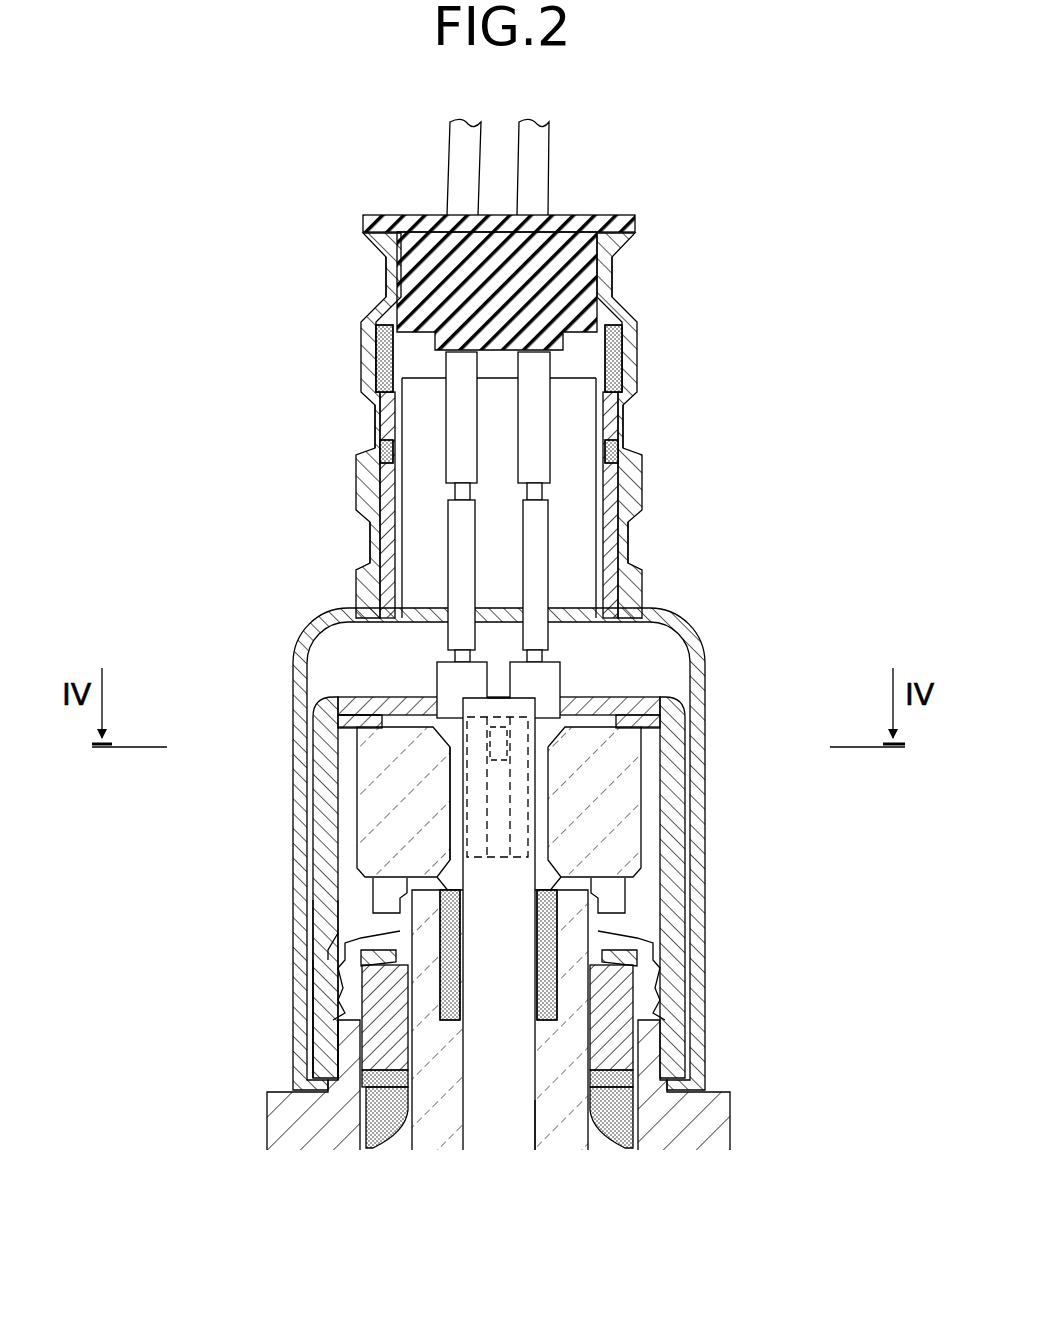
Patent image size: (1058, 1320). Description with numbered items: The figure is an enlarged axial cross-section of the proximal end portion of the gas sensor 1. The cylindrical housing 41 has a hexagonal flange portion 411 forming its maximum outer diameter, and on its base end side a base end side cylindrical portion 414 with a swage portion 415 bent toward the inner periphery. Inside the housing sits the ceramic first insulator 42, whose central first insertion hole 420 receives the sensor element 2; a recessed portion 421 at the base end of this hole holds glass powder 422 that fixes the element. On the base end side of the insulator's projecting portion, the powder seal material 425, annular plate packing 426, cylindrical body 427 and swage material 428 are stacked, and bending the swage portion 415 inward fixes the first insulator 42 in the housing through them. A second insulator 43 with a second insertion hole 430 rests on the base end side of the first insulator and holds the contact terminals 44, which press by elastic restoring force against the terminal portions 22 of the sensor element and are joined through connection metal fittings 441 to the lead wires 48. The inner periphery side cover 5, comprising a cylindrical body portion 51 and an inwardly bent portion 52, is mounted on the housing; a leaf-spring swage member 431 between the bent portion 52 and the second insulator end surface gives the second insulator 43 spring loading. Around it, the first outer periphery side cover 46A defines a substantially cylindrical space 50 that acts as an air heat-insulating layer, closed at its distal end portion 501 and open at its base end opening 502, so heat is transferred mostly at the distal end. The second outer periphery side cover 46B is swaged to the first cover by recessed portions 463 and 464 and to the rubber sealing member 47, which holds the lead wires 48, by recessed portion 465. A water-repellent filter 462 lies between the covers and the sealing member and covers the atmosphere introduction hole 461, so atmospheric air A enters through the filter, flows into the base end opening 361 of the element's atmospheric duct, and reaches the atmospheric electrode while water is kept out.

The gas sensor 1 is at (682, 196).
The sensor element 2 is at (500, 913).
The inner periphery side cover 5 is at (600, 948).
The terminal portions 22 is at (420, 757).
The housing 41 is at (740, 1128).
The first insulator 42 is at (437, 1130).
The second insulator 43 is at (405, 810).
The contact terminals 44 is at (640, 737).
The first outer periphery side cover 46A is at (704, 800).
The second outer periphery side cover 46B is at (633, 487).
The sealing member 47 is at (612, 262).
The lead wires 48 is at (460, 410).
The substantially cylindrical space 50 is at (300, 907).
The cylindrical body portion 51 is at (323, 985).
The bent portion 52 is at (360, 700).
The base end opening 361 is at (497, 700).
The flange portion 411 is at (290, 1128).
The base end side cylindrical portion 414 is at (340, 1055).
The swage portion 415 is at (345, 950).
The first insertion hole 420 is at (535, 1118).
The recessed portion for fixing 421 is at (550, 873).
The glass powder 422 is at (575, 945).
The powder seal material 425 is at (622, 1105).
The annular plate packing 426 is at (632, 1080).
The cylindrical body 427 is at (608, 1018).
The swage material 428 is at (548, 955).
The second insertion hole 430 is at (465, 812).
The swage member 431 is at (655, 710).
The connection metal fittings 441 is at (462, 555).
The atmosphere introduction hole 461 is at (376, 357).
The water-repellent filter 462 is at (385, 383).
The recessed portion 463 is at (633, 545).
The recessed portion 464 is at (625, 425).
The recessed portion 465 is at (613, 285).
The end portion 501 is at (350, 1062).
The opening 502 is at (317, 703).
The atmospheric air A is at (573, 442).